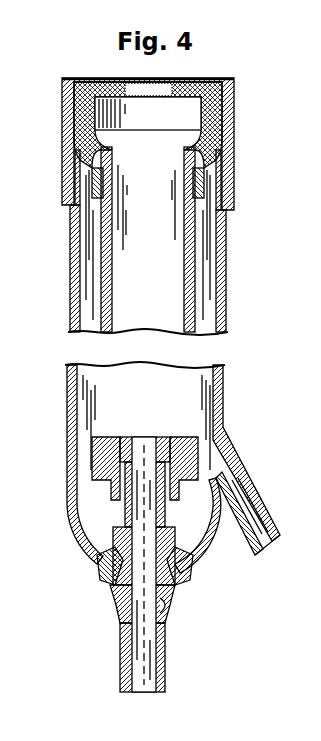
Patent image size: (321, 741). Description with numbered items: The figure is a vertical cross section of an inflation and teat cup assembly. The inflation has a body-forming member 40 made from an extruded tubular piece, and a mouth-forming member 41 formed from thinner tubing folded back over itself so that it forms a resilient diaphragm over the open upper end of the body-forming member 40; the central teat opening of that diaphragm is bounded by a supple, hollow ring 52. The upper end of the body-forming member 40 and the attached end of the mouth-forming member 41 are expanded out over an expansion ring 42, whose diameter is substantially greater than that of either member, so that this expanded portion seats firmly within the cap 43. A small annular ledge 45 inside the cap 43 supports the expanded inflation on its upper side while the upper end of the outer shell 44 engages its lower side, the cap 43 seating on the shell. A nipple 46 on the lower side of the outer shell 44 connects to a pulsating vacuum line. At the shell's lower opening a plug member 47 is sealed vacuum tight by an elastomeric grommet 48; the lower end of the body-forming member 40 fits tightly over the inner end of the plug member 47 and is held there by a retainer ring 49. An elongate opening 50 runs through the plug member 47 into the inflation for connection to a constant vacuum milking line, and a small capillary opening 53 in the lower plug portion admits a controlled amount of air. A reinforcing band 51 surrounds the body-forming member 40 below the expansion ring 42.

The body-forming member 40 is at (104, 288).
The mouth-forming member 41 is at (80, 80).
The expansion ring 42 is at (146, 201).
The cap 43 is at (62, 124).
The outer shell 44 is at (74, 313).
The annular ledge 45 is at (76, 165).
The nipple 46 is at (255, 513).
The plug member 47 is at (168, 450).
The grommet 48 is at (97, 585).
The retainer ring 49 is at (95, 467).
The elongate opening 50 is at (137, 680).
The reinforcing band 51 is at (102, 190).
The hollow ring 52 is at (118, 78).
The capillary opening 53 is at (161, 606).